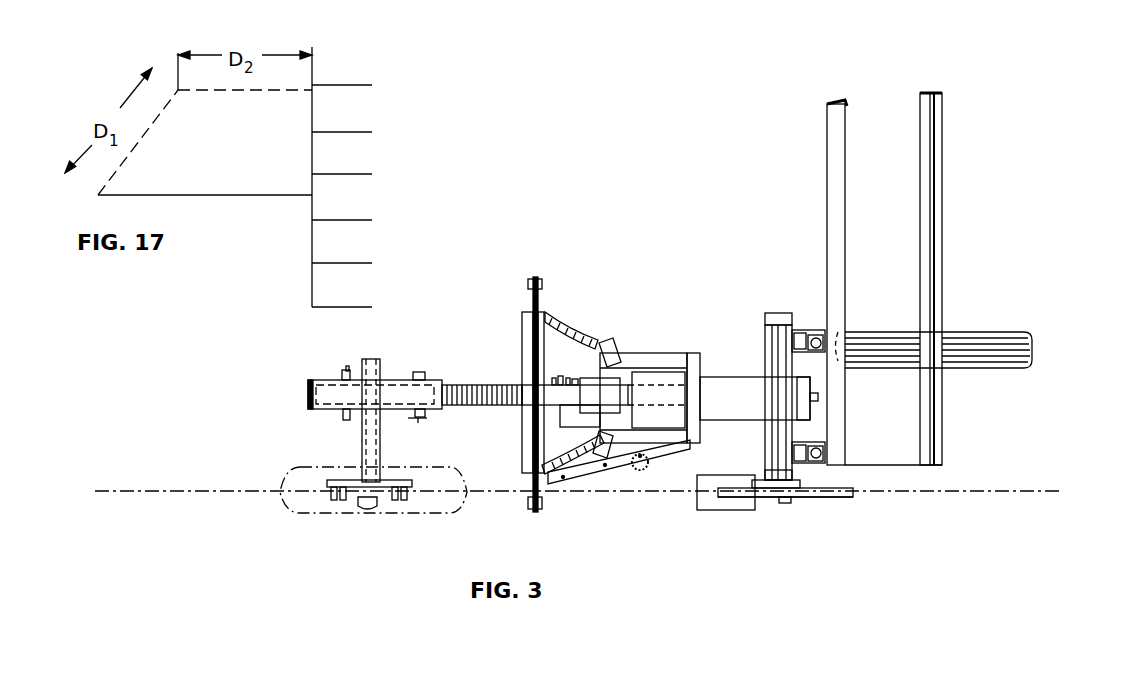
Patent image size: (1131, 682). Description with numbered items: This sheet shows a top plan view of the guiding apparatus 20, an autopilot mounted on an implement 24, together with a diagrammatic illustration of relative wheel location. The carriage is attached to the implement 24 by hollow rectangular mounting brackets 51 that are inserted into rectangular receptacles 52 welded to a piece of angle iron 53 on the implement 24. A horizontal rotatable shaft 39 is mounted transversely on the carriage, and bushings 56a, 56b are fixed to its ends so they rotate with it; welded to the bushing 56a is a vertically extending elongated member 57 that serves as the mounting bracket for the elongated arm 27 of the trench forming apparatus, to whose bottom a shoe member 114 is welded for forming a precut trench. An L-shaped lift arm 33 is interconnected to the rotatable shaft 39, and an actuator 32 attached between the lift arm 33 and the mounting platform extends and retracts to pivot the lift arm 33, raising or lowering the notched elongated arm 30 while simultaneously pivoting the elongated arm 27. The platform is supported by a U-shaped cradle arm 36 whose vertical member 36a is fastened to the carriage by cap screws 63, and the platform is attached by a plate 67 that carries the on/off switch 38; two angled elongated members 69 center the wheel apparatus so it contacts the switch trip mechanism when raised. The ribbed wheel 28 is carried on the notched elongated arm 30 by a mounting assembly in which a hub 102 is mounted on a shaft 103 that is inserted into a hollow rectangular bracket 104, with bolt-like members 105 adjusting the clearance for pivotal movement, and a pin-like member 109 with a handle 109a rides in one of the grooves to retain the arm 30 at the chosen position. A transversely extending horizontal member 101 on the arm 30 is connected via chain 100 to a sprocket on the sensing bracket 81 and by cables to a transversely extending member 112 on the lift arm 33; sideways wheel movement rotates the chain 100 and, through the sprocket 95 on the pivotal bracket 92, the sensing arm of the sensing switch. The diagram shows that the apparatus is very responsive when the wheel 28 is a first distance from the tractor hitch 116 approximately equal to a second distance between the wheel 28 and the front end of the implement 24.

In FIG. 3, the guiding apparatus 20 is at (316, 512).
In FIG. 17, the implement 24 is at (360, 105).
In FIG. 3, the implement 24 is at (937, 222).
In FIG. 3, the elongated arm 27 is at (843, 495).
In FIG. 17, the ribbed wheel 28 is at (178, 90).
In FIG. 3, the notched elongated arm 30 is at (477, 385).
In FIG. 3, the actuator 32 is at (667, 395).
In FIG. 3, the lift arm 33 is at (547, 393).
In FIG. 3, the cradle arm 36 is at (738, 408).
In FIG. 3, the vertical member 36a is at (805, 388).
In FIG. 3, the on/off switch 38 is at (592, 380).
In FIG. 3, the rotatable shaft 39 is at (764, 358).
In FIG. 3, the mounting brackets 51 is at (800, 333).
In FIG. 3, the rectangular receptacles 52 is at (822, 448).
In FIG. 3, the angle iron 53 is at (837, 133).
In FIG. 3, the bushing 56a is at (770, 483).
In FIG. 3, the bushing 56b is at (774, 318).
In FIG. 3, the elongated member 57 is at (797, 486).
In FIG. 3, the cap screws 63 is at (820, 398).
In FIG. 3, the plate 67 is at (655, 378).
In FIG. 3, the elongated members 69 is at (613, 346).
In FIG. 3, the bracket 81 is at (565, 421).
In FIG. 3, the bracket 92 is at (593, 472).
In FIG. 3, the sprocket 95 is at (649, 464).
In FIG. 3, the chain 100 is at (572, 338).
In FIG. 3, the horizontal member 101 is at (520, 330).
In FIG. 3, the hub 102 is at (408, 480).
In FIG. 3, the shaft 103 is at (370, 358).
In FIG. 3, the hollow rectangular bracket 104 is at (346, 420).
In FIG. 3, the bolt-like members 105 is at (341, 376).
In FIG. 3, the pin-like member 109 is at (398, 380).
In FIG. 3, the handle 109a is at (426, 419).
In FIG. 3, the transversely extending member 112 is at (537, 303).
In FIG. 3, the shoe member 114 is at (713, 510).
In FIG. 17, the tractor hitch 116 is at (63, 172).